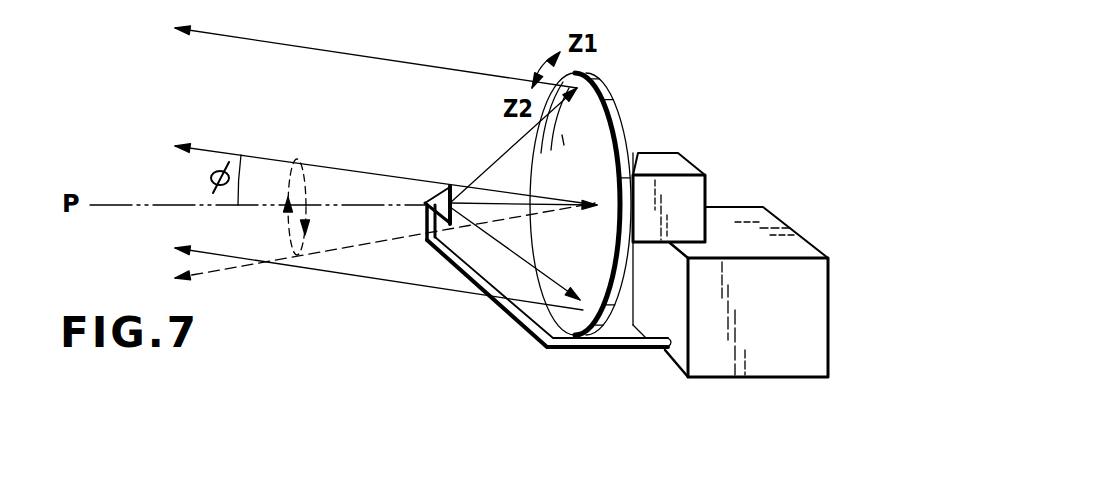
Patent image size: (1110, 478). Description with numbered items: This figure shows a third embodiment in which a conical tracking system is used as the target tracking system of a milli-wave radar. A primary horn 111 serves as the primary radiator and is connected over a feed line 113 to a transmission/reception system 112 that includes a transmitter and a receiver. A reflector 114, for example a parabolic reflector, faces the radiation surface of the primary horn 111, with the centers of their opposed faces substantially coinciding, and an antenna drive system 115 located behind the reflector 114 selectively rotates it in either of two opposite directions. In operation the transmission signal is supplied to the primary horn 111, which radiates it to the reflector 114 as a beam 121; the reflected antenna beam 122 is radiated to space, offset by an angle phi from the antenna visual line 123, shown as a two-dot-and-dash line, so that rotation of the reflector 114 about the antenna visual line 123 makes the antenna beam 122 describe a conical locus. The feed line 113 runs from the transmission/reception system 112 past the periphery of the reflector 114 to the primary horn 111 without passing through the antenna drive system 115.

The primary horn 111 is at (430, 186).
The transmission/reception system 112 is at (773, 367).
The feed line 113 is at (505, 313).
The reflector 114 is at (617, 97).
The antenna drive system 115 is at (682, 162).
The beam 121 is at (552, 283).
The antenna beam 122 is at (390, 57).
The antenna visual line 123 is at (110, 203).